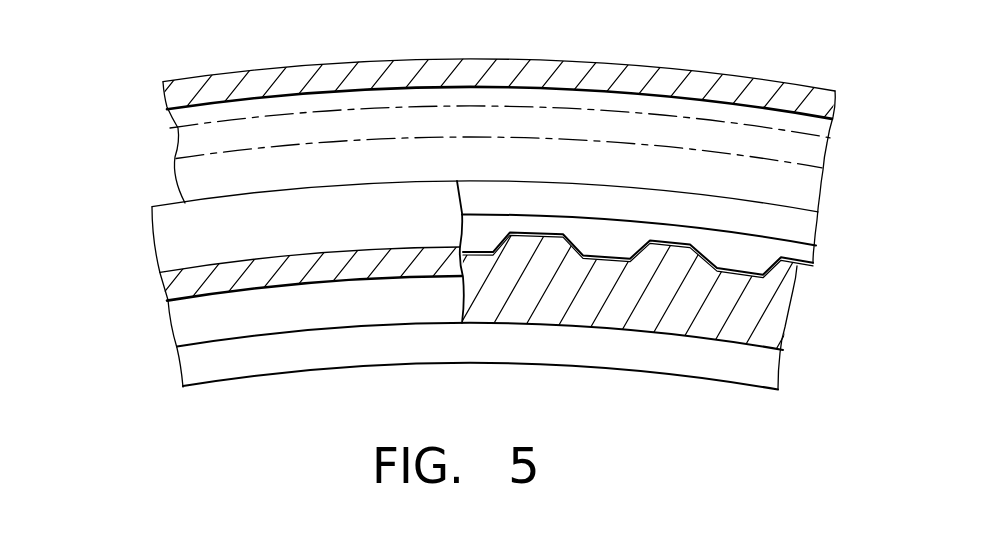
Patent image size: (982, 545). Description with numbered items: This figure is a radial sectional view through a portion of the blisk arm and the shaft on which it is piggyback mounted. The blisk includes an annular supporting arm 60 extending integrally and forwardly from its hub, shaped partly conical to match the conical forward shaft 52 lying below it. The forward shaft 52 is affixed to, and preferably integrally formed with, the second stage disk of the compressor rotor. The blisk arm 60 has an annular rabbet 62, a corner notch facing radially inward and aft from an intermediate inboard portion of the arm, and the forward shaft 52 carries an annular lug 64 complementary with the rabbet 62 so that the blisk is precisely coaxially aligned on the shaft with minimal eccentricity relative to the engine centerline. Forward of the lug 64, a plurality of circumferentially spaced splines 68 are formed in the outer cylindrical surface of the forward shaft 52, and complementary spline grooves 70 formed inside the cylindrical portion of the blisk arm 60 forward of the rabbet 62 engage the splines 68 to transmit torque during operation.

The forward shaft 52 is at (407, 367).
The supporting arm 60 is at (407, 60).
The rabbet 62 is at (818, 222).
The lug 64 is at (152, 246).
The splines 68 is at (538, 232).
The spline grooves 70 is at (685, 251).